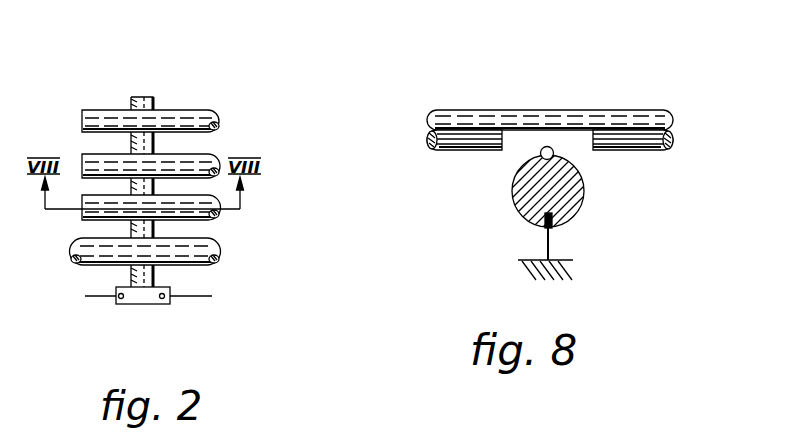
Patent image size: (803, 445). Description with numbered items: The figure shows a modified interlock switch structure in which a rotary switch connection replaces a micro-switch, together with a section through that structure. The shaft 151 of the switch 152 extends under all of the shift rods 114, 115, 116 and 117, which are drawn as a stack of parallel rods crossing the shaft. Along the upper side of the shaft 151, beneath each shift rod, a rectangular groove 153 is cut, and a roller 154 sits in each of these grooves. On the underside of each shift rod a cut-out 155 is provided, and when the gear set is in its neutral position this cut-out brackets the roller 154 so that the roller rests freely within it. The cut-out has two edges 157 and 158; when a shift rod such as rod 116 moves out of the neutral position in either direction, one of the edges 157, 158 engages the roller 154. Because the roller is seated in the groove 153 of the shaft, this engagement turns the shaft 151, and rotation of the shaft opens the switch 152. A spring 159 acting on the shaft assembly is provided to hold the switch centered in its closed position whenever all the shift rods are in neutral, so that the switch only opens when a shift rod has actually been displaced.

In FIG. 2, the shaft 151 is at (150, 96).
In FIG. 2, the shift rod 114 is at (220, 112).
In FIG. 2, the shift rod 115 is at (219, 155).
In FIG. 2, the shift rod 116 is at (221, 218).
In FIG. 8, the shift rod 116 is at (443, 117).
In FIG. 2, the shift rod 117 is at (221, 254).
In FIG. 2, the switch 152 is at (147, 302).
In FIG. 8, the rectangular groove 153 is at (559, 173).
In FIG. 8, the roller 154 is at (549, 147).
In FIG. 8, the cut-out 155 is at (511, 143).
In FIG. 8, the edge of cut-out 157 is at (497, 133).
In FIG. 8, the edge of cut-out 158 is at (599, 140).
In FIG. 8, the spring 159 is at (551, 246).